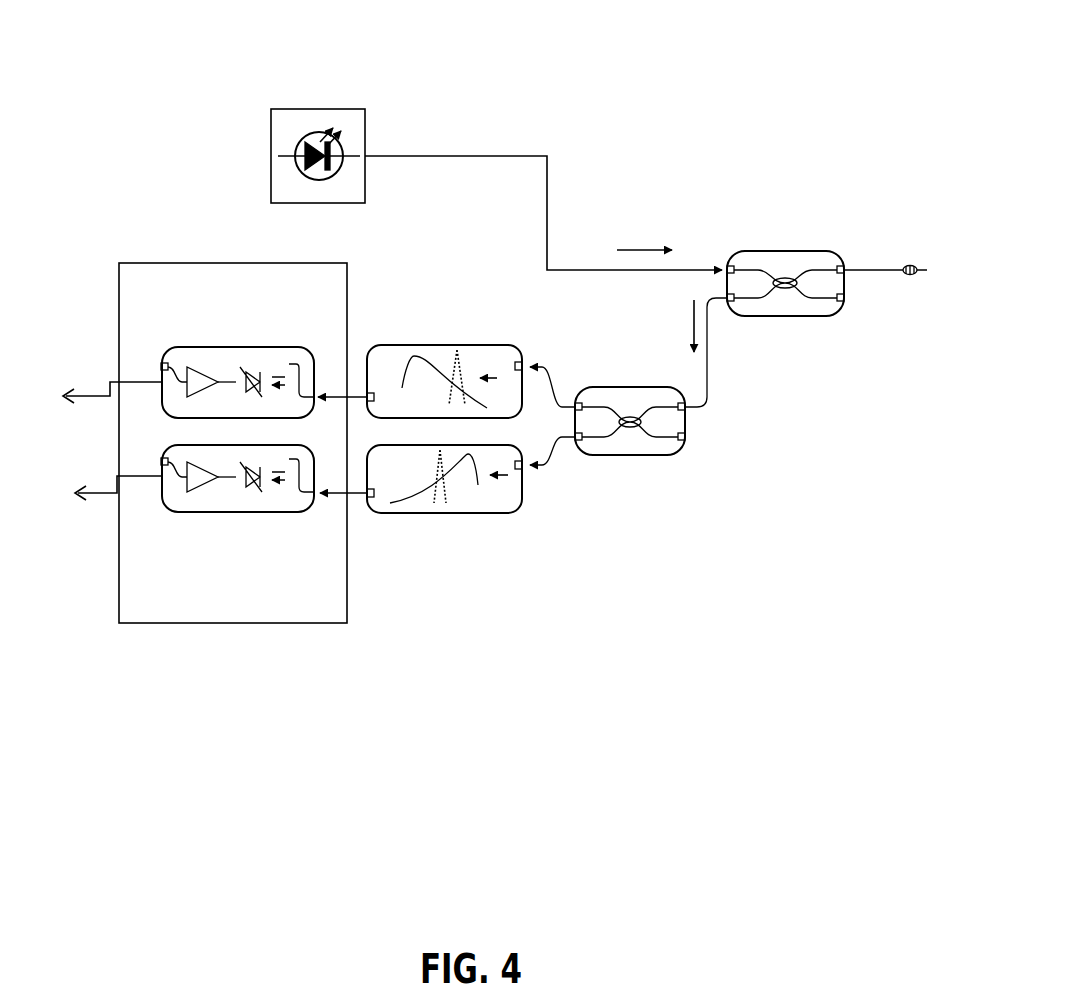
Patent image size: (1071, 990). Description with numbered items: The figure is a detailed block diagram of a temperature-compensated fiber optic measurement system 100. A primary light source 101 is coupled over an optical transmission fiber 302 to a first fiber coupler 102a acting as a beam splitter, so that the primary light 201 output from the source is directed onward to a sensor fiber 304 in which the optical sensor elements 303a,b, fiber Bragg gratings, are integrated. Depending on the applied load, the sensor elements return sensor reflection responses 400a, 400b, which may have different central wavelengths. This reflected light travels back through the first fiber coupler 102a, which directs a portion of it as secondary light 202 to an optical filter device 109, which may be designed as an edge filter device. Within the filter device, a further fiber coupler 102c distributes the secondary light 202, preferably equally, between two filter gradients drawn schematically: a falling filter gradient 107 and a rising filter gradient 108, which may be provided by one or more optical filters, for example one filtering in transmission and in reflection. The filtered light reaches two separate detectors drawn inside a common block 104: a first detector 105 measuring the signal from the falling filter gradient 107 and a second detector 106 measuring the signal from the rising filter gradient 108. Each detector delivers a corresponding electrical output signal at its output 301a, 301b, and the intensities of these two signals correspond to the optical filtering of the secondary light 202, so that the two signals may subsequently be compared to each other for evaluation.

The optical communication system 100 is at (737, 35).
The primary light source 101 is at (315, 108).
The optical transmission fiber 302 is at (472, 152).
The primary light 201 is at (645, 249).
The first fiber coupler 102a is at (766, 316).
The sensor fiber 304 is at (870, 272).
The optical sensor elements 303a,b is at (912, 266).
The secondary light 202 is at (686, 340).
The fiber coupler 102c is at (658, 455).
The optical filter device 109 is at (454, 632).
The falling filter gradient 107 is at (444, 344).
The rising filter gradient 108 is at (444, 516).
The sensor reflection response 400a is at (453, 508).
The sensor reflection response 400b is at (461, 354).
The receiver unit 104 is at (243, 484).
The first detector 105 is at (172, 347).
The second detector 106 is at (198, 512).
The first electrical output 301a is at (82, 390).
The second electrical output 301b is at (88, 500).